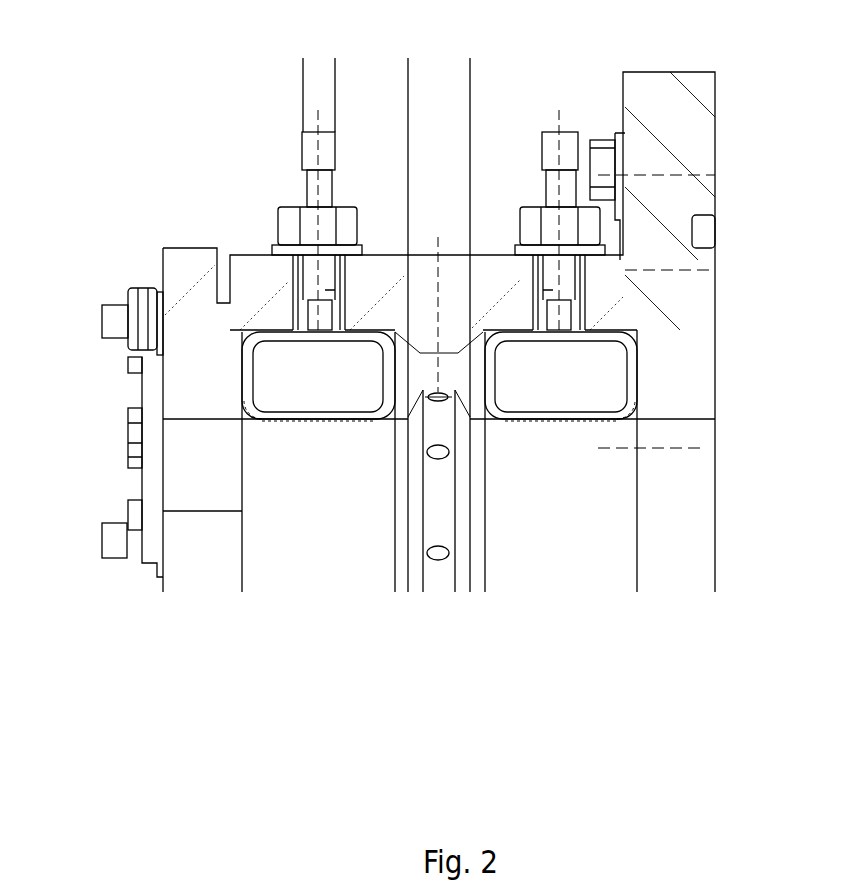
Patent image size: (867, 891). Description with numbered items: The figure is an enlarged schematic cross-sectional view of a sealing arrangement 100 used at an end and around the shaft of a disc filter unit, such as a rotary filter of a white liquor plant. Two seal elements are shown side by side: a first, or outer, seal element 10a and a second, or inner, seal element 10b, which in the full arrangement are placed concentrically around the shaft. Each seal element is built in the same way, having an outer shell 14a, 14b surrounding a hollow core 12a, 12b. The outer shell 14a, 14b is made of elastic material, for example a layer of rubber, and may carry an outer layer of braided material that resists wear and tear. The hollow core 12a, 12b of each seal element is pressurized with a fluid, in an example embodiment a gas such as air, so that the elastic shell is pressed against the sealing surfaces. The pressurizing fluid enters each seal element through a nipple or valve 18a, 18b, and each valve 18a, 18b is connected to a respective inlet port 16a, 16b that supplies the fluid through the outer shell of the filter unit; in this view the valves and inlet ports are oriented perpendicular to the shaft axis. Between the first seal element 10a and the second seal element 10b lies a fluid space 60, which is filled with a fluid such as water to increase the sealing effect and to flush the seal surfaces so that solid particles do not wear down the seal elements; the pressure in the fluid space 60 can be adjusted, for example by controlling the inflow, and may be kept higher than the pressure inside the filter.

The sealing arrangement 100 is at (145, 71).
The first seal element 10a is at (283, 385).
The second seal element 10b is at (602, 387).
The hollow core 12a is at (315, 380).
The hollow core 12b is at (565, 372).
The outer shell 14a is at (258, 413).
The outer shell 14b is at (622, 412).
The inlet port 16a is at (310, 185).
The inlet port 16b is at (562, 187).
The valve 18a is at (310, 288).
The valve 18b is at (562, 295).
The fluid space 60 is at (420, 380).